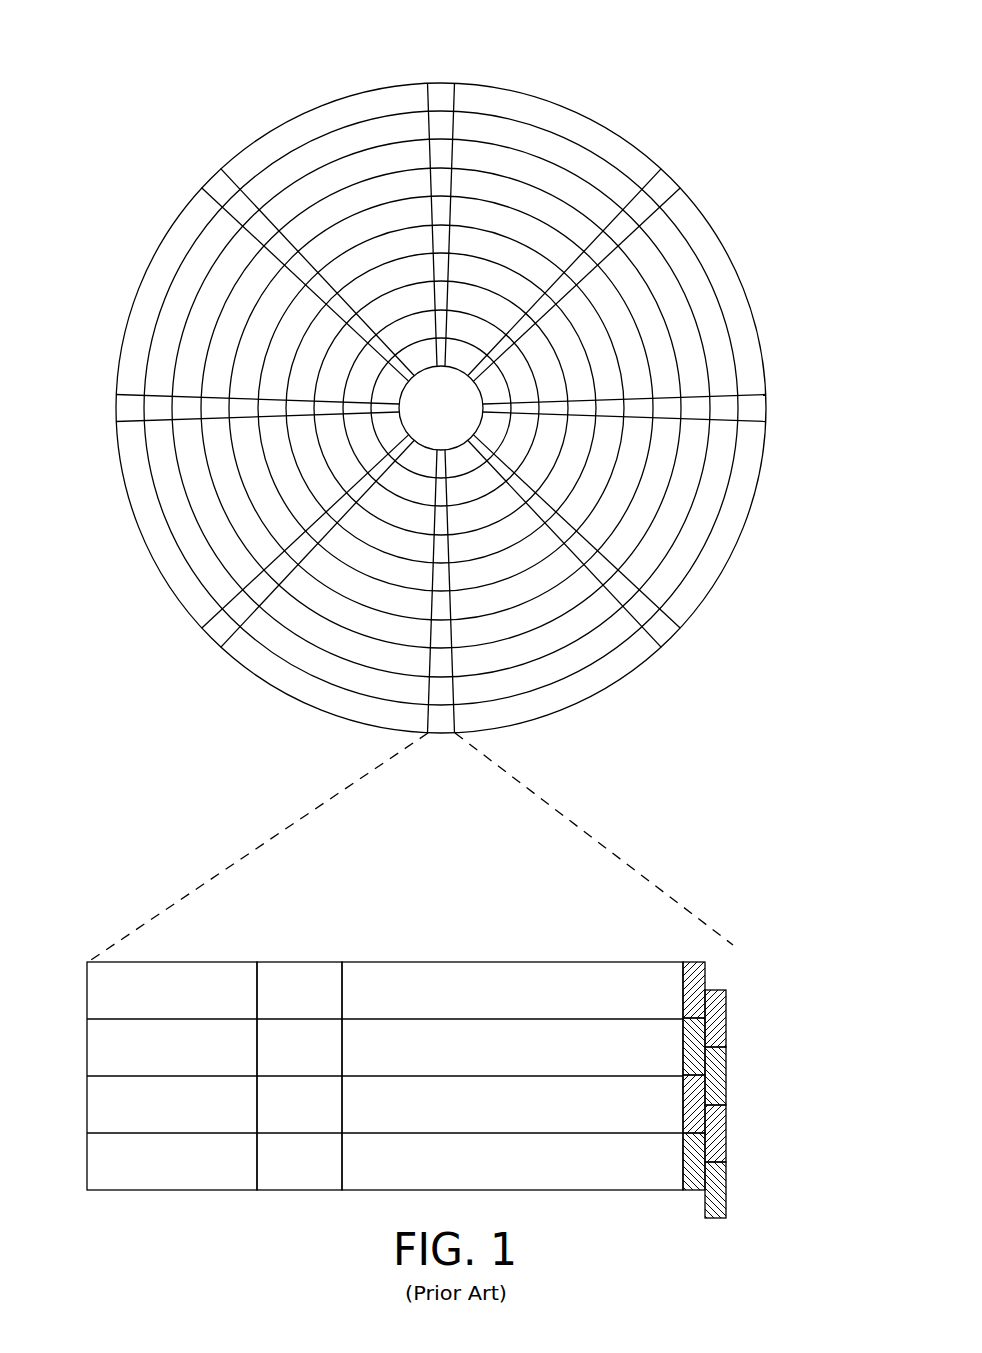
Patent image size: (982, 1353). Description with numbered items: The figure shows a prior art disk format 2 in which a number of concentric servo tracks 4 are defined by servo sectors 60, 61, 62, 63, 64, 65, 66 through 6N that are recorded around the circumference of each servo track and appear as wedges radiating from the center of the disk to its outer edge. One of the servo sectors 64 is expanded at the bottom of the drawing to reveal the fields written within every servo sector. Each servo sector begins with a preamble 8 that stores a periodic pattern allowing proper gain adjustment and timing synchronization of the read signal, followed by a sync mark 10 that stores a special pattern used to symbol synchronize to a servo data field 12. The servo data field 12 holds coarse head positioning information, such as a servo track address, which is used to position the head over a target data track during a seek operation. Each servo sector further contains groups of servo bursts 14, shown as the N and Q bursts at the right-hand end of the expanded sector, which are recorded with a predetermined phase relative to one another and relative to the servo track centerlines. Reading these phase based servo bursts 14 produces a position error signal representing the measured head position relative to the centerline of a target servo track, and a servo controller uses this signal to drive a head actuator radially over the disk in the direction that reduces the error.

The disk format 2 is at (196, 83).
The servo tracks 4 is at (553, 148).
The servo sector 60 is at (441, 93).
The servo sector 61 is at (662, 185).
The servo sector 62 is at (760, 408).
The servo sector 63 is at (665, 633).
The servo sector 64 is at (296, 806).
The servo sector 65 is at (215, 633).
The servo sector 66 is at (118, 408).
The servo sector 6N is at (215, 183).
The preamble 8 is at (180, 962).
The sync mark 10 is at (302, 962).
The servo data field 12 is at (497, 962).
The servo bursts 14 is at (722, 960).